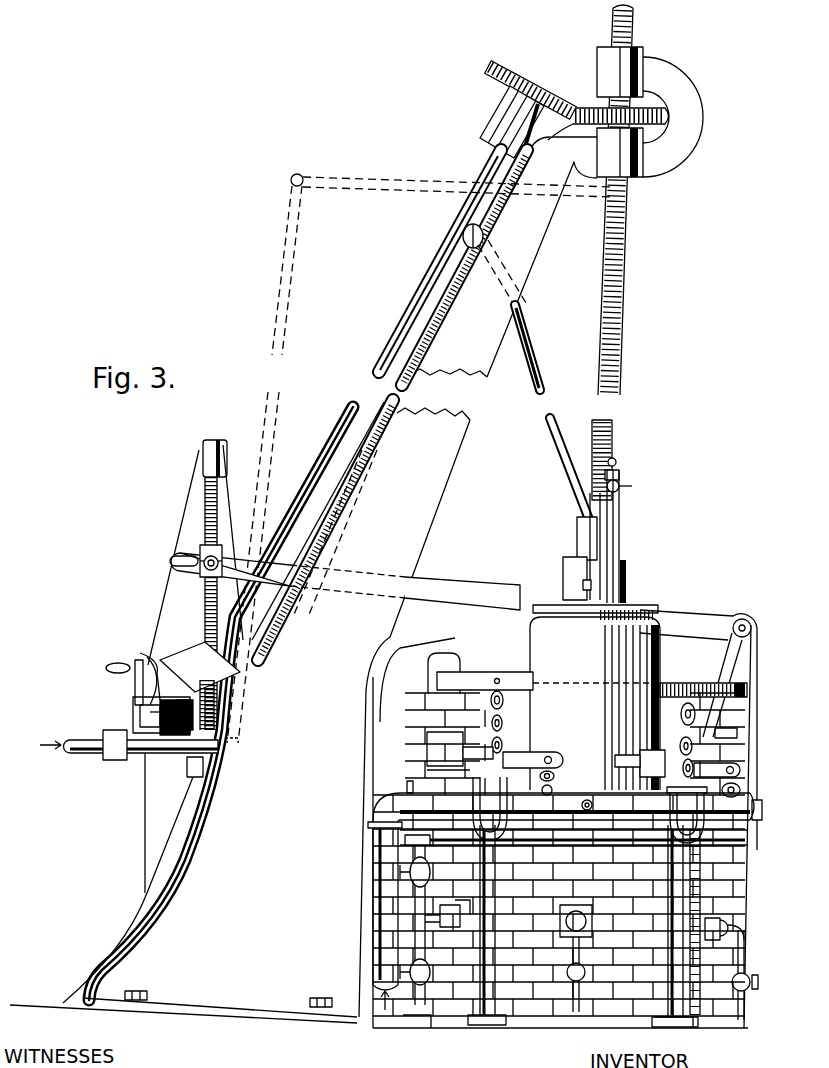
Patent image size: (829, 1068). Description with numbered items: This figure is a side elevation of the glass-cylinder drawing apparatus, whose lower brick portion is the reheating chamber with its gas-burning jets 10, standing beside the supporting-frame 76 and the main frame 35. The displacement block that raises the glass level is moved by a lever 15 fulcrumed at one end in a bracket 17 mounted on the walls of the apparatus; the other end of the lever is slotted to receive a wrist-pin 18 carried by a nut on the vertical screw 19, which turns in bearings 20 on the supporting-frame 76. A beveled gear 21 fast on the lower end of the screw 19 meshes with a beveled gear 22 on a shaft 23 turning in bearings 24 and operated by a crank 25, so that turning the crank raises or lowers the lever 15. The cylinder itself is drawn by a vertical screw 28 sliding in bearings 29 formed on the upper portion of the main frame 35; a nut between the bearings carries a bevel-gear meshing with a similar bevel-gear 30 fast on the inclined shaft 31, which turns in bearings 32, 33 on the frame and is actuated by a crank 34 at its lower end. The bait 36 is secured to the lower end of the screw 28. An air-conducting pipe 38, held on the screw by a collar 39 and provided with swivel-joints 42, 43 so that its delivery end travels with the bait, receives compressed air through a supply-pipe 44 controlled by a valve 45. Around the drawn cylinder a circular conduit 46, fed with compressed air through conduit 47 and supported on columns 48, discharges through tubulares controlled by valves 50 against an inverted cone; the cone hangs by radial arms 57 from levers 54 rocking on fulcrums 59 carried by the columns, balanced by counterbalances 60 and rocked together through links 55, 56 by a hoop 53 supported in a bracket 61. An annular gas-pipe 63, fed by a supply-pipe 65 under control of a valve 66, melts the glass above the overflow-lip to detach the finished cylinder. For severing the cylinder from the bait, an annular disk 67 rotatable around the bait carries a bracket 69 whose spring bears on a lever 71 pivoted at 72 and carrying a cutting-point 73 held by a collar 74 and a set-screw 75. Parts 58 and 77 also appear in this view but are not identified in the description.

The gas-burning jets 10 is at (580, 927).
The lever 15 is at (687, 610).
The bracket 17 is at (737, 660).
The wrist-pin 18 is at (203, 550).
The vertical screw 19 is at (207, 502).
The bearings 20 is at (203, 455).
The beveled gear 21 is at (187, 750).
The beveled gear 22 is at (157, 673).
The shaft 23 is at (133, 712).
The bearings 24 is at (160, 707).
The crank 25 is at (107, 668).
The vertical screw 28 is at (617, 327).
The bearings 29 is at (627, 50).
The bevel-gear 30 is at (497, 54).
The inclined shaft 31 is at (397, 327).
The bearing 32 is at (497, 126).
The bearing 33 is at (203, 667).
The crank 34 is at (167, 660).
The main frame 35 is at (303, 580).
The bait 36 is at (595, 703).
The air-conducting pipe 38 is at (290, 217).
The collar 39 is at (580, 525).
The swivel-joint 42 is at (463, 234).
The swivel-joint 43 is at (230, 752).
The supply-pipe 44 is at (83, 745).
The valve 45 is at (110, 752).
The circular conduit 46 is at (561, 801).
The conduit 47 is at (372, 928).
The columns 48 is at (480, 993).
The valve 50 is at (757, 812).
The hoop 53 is at (480, 657).
The levers 54 is at (510, 757).
The link 55 is at (492, 700).
The link 56 is at (496, 702).
The radial arms 57 is at (552, 777).
The eye 58 is at (552, 762).
The fulcrums 59 is at (460, 768).
The counterbalances 60 is at (447, 743).
The bracket 61 is at (747, 833).
The annular gas-pipe 63 is at (570, 845).
The supply-pipe 65 is at (397, 848).
The valve 66 is at (417, 873).
The annular disk 67 is at (643, 610).
The bracket 69 is at (600, 533).
The lever 71 is at (613, 540).
The pivot 72 is at (583, 583).
The cutting-point 73 is at (620, 488).
The collar 74 is at (620, 477).
The set-screw 75 is at (617, 463).
The supporting-frame 76 is at (169, 771).
The gear segment 77 is at (587, 108).